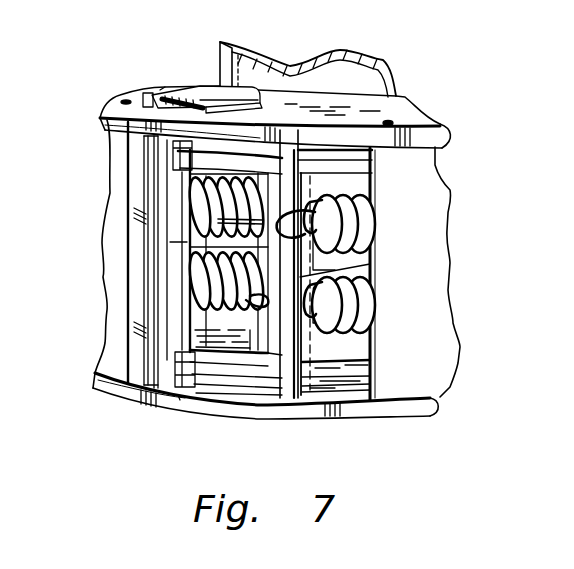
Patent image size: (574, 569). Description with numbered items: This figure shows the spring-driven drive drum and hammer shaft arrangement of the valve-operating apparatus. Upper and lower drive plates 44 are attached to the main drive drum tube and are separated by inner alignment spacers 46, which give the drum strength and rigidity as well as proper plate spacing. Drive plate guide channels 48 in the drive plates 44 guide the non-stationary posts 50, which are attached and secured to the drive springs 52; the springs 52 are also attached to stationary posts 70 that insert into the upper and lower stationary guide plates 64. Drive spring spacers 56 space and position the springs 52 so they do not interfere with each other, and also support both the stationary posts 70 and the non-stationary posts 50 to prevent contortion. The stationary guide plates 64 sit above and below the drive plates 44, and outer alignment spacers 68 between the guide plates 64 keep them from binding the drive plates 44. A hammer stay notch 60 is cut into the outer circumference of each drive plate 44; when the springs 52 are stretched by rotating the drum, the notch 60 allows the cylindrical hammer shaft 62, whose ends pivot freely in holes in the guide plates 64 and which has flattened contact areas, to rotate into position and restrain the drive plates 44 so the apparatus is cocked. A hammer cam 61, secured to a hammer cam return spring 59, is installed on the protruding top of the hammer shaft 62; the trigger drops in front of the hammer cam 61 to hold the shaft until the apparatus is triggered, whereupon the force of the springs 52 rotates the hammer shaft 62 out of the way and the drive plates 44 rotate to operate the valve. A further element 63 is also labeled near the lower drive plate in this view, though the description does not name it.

The drive plate 44 is at (353, 167).
The inner alignment spacer 46 is at (337, 190).
The drive plate guide channel 48 is at (225, 352).
The non-stationary post 50 is at (250, 345).
The drive spring 52 is at (200, 190).
The drive spring spacer 56 is at (253, 243).
The hammer cam return spring 59 is at (150, 130).
The hammer stay notch 60 is at (175, 145).
The hammer cam 61 is at (223, 92).
The hammer shaft 62 is at (162, 88).
The clip 63 is at (175, 365).
The stationary guide plate 64 is at (440, 136).
The outer alignment spacer 68 is at (120, 280).
The stationary post 70 is at (292, 400).